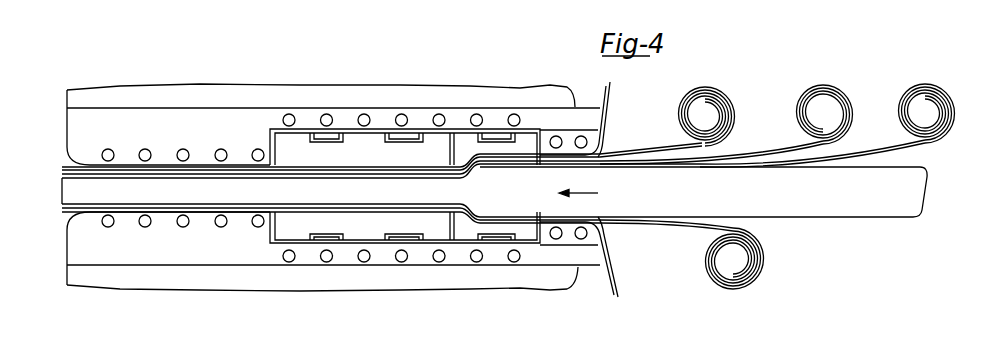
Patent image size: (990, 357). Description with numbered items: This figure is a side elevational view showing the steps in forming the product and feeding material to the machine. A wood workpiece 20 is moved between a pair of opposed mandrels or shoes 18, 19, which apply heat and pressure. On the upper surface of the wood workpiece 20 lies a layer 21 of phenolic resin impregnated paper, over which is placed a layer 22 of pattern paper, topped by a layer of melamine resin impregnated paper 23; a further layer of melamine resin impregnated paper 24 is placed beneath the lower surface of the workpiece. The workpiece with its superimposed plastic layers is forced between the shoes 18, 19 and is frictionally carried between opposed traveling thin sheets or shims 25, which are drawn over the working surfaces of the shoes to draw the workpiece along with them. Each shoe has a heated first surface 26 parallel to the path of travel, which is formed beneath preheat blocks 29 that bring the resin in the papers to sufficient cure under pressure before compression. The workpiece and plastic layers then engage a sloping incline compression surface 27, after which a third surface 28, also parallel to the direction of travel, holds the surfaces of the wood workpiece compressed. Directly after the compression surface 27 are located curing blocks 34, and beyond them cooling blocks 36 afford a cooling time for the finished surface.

The shoe 18 is at (407, 110).
The shoe 19 is at (455, 263).
The wood workpiece 20 is at (517, 168).
The layer of phenolic resin impregnated paper 21 is at (913, 152).
The layer of pattern paper 22 is at (828, 151).
The layer of melamine resin impregnated paper 23 is at (716, 141).
The layer of melamine resin impregnated paper 24 is at (742, 228).
The traveling thin sheets or shims 25 is at (606, 109).
The first surface 26 is at (525, 162).
The sloping incline compression surface 27 is at (468, 159).
The third surface 28 is at (318, 168).
The preheat blocks 29 is at (502, 232).
The curing blocks 34 is at (373, 158).
The cooling blocks 36 is at (261, 184).